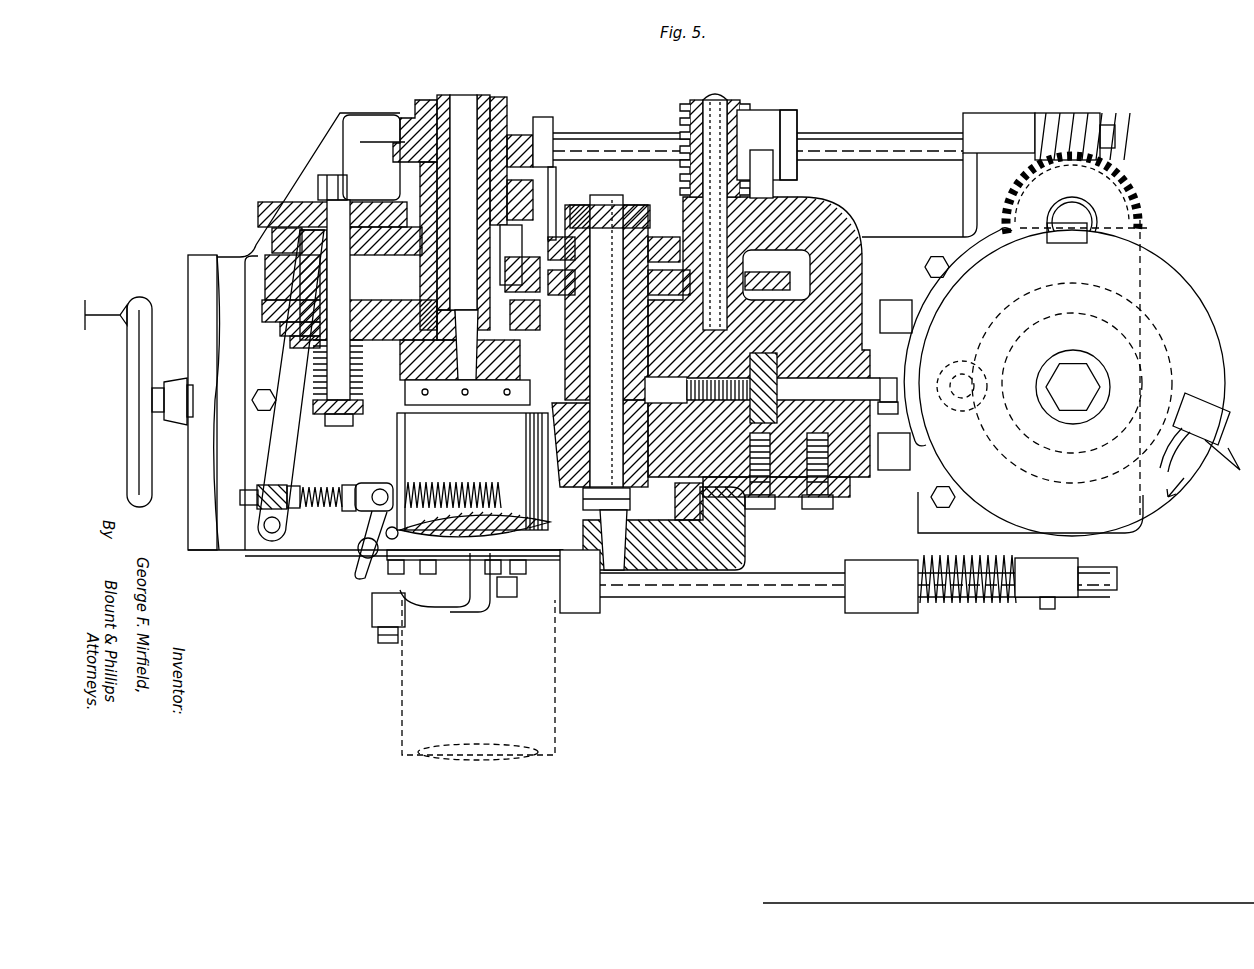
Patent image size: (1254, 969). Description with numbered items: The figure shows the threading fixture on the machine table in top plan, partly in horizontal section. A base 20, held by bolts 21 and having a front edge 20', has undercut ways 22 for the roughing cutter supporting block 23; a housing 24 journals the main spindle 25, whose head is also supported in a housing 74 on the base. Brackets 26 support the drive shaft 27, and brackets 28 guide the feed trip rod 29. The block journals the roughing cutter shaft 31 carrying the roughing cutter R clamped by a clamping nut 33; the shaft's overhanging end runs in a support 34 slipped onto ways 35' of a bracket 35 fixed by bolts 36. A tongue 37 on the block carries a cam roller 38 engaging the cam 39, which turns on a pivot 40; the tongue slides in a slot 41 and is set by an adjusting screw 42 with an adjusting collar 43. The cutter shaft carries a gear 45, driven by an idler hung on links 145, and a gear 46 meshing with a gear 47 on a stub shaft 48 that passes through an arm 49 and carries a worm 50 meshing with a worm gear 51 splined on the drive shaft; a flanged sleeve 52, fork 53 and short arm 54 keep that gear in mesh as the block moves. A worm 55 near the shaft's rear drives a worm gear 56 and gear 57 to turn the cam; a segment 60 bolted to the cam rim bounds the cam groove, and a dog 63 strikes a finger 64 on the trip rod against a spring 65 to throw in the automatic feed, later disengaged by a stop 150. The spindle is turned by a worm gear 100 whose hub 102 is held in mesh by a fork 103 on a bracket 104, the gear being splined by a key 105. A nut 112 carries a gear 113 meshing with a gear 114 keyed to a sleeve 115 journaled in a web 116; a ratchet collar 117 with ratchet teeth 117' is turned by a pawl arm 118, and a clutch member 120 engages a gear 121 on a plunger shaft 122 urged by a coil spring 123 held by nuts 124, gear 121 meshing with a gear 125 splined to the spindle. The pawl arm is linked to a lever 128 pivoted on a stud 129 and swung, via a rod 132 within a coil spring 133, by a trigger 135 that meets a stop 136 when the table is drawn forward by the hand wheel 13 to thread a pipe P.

The hand wheel 13 is at (130, 350).
The base 20 is at (360, 405).
The front edge of the base 20' is at (210, 403).
The bolts 21 is at (264, 390).
The undercut ways 22 is at (905, 320).
The roughing cutter supporting block 23 is at (1015, 376).
The housing 24 is at (519, 255).
The main spindle 25 is at (460, 97).
The brackets 26 is at (545, 125).
The drive shaft 27 is at (893, 133).
The brackets 28 is at (582, 613).
The feed trip rod 29 is at (835, 595).
The roughing cutter shaft 31 is at (612, 207).
The clamping nut 33 is at (606, 499).
The support 34 is at (665, 555).
The bracket 35 is at (776, 521).
The ways 35' is at (673, 504).
The bolts 36 is at (803, 500).
The tongue 37 is at (888, 378).
The cam roller 38 is at (962, 412).
The cam 39 is at (1072, 383).
The pivot 40 is at (1073, 387).
The slot 41 is at (763, 388).
The adjusting screw 42 is at (762, 390).
The adjusting collar 43 is at (893, 408).
The gear 45 is at (664, 239).
The gear 46 is at (537, 315).
The gear 47 is at (776, 275).
The stub shaft 48 is at (704, 210).
The arm 49 is at (812, 206).
The worm 50 is at (682, 126).
The worm gear 51 is at (724, 98).
The flanged sleeve 52 is at (798, 125).
The fork 53 is at (775, 110).
The overhanging arm 54 is at (774, 190).
The worm 55 is at (1073, 113).
The worm gear 56 is at (1140, 207).
The gear 57 is at (1107, 192).
The segment 60 is at (980, 272).
The dog 63 is at (1205, 455).
The finger 64 is at (1062, 598).
The spring 65 is at (985, 603).
The housing 74 is at (522, 355).
The worm gear 100 is at (357, 287).
The hub 102 is at (511, 153).
The fork 103 is at (425, 100).
The bracket 104 is at (367, 127).
The key or spline 105 is at (490, 95).
The member 112 is at (392, 319).
The gear 113 is at (537, 274).
The gear 114 is at (285, 310).
The sleeve 115 is at (384, 241).
The web 116 is at (296, 270).
The ratchet collar 117 is at (355, 367).
The ratchet teeth 117' is at (286, 328).
The pawl arm 118 is at (303, 342).
The clutch member 120 is at (275, 237).
The gear 121 is at (262, 210).
The plunger shaft 122 is at (320, 415).
The coil spring 123 is at (355, 420).
The nuts 124 is at (294, 385).
The gear 125 is at (524, 199).
The lever 128 is at (282, 458).
The stud 129 is at (272, 533).
The rod 132 is at (240, 500).
The coil spring 133 is at (327, 508).
The trigger 135 is at (360, 578).
The stop 136 is at (372, 615).
The links 145 is at (575, 215).
The stop 150 is at (470, 612).
The piston cylinder P is at (475, 505).
The roughing cutter R is at (479, 392).